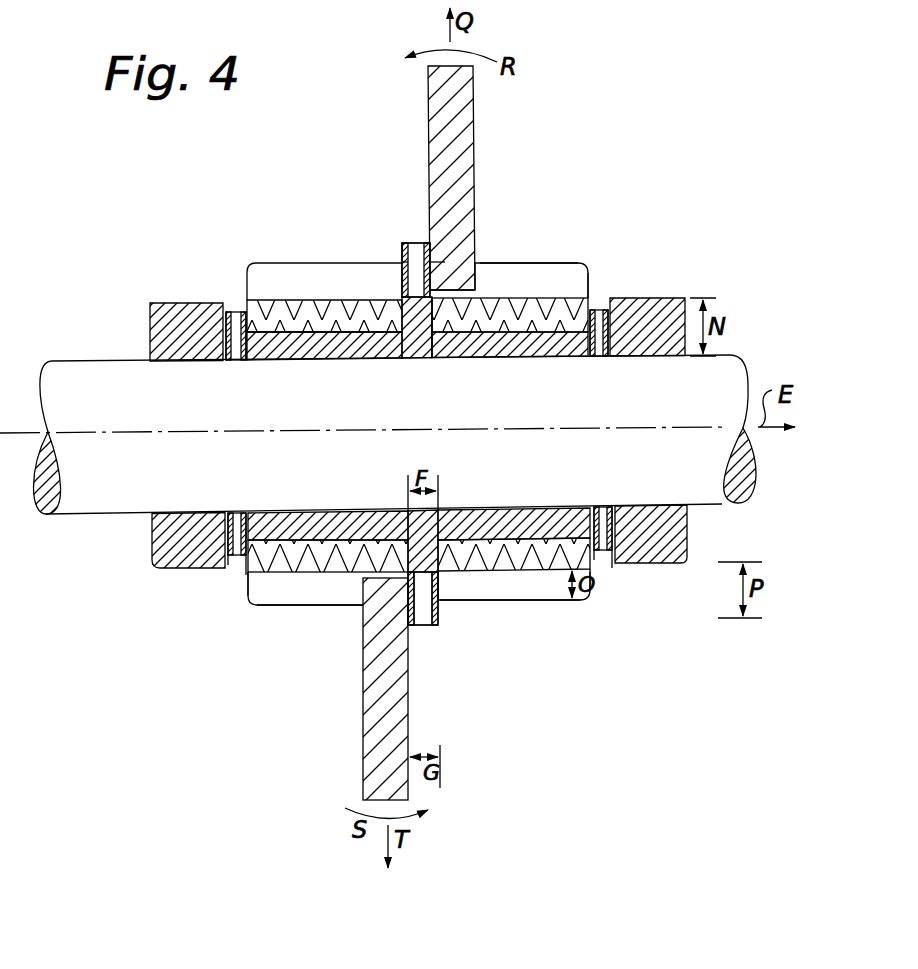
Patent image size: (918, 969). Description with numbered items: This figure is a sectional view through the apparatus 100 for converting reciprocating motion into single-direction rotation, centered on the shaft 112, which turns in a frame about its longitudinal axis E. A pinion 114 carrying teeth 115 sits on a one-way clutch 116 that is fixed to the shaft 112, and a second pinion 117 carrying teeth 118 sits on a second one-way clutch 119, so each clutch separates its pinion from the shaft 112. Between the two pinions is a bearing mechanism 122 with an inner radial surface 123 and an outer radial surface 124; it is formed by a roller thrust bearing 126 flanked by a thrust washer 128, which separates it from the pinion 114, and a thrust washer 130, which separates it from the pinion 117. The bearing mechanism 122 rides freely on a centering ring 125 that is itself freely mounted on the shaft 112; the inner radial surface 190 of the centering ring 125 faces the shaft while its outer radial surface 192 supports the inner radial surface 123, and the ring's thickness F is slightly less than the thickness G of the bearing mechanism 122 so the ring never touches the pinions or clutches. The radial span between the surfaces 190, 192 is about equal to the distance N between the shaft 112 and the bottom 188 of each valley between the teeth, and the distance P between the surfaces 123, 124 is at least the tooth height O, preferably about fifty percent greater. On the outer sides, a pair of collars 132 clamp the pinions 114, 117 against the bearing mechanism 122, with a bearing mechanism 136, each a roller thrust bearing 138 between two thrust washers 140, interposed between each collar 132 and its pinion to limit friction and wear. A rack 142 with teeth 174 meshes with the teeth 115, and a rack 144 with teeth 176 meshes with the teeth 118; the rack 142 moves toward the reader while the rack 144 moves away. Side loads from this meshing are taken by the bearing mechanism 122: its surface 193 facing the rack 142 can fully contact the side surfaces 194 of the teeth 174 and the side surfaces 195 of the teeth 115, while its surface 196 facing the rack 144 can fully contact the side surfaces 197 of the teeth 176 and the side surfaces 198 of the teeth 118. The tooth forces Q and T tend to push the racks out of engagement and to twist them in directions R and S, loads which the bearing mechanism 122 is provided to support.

The hub assembly 100 is at (699, 64).
The shaft 112 is at (735, 357).
The pinion 114 is at (592, 296).
The teeth 115 is at (578, 262).
The one-way clutch 116 is at (547, 345).
The pinion 117 is at (235, 305).
The teeth 118 is at (284, 285).
The one-way clutch 119 is at (268, 345).
The bearing mechanism 122 is at (397, 194).
The inner radial surface 123 is at (406, 356).
The outer radial surface 124 is at (418, 243).
The centering ring 125 is at (552, 590).
The roller thrust bearing 126 is at (433, 626).
The thrust washer 128 is at (428, 626).
The thrust washer 130 is at (418, 626).
The collar 132 is at (150, 322).
The bearing mechanism 136 is at (228, 315).
The roller thrust bearing 138 is at (240, 568).
The thrust washer 140 is at (230, 570).
The rack 142 is at (476, 93).
The rack 144 is at (363, 784).
The teeth 174 is at (455, 290).
The teeth 176 is at (362, 583).
The bottom 188 is at (548, 580).
The inner radial surface 190 is at (432, 345).
The outer radial surface 192 is at (402, 275).
The surface 193 is at (445, 265).
The side surfaces 194 is at (402, 250).
The side surfaces 195 is at (402, 268).
The surface 196 is at (363, 618).
The side surfaces 197 is at (425, 626).
The side surfaces 198 is at (442, 588).